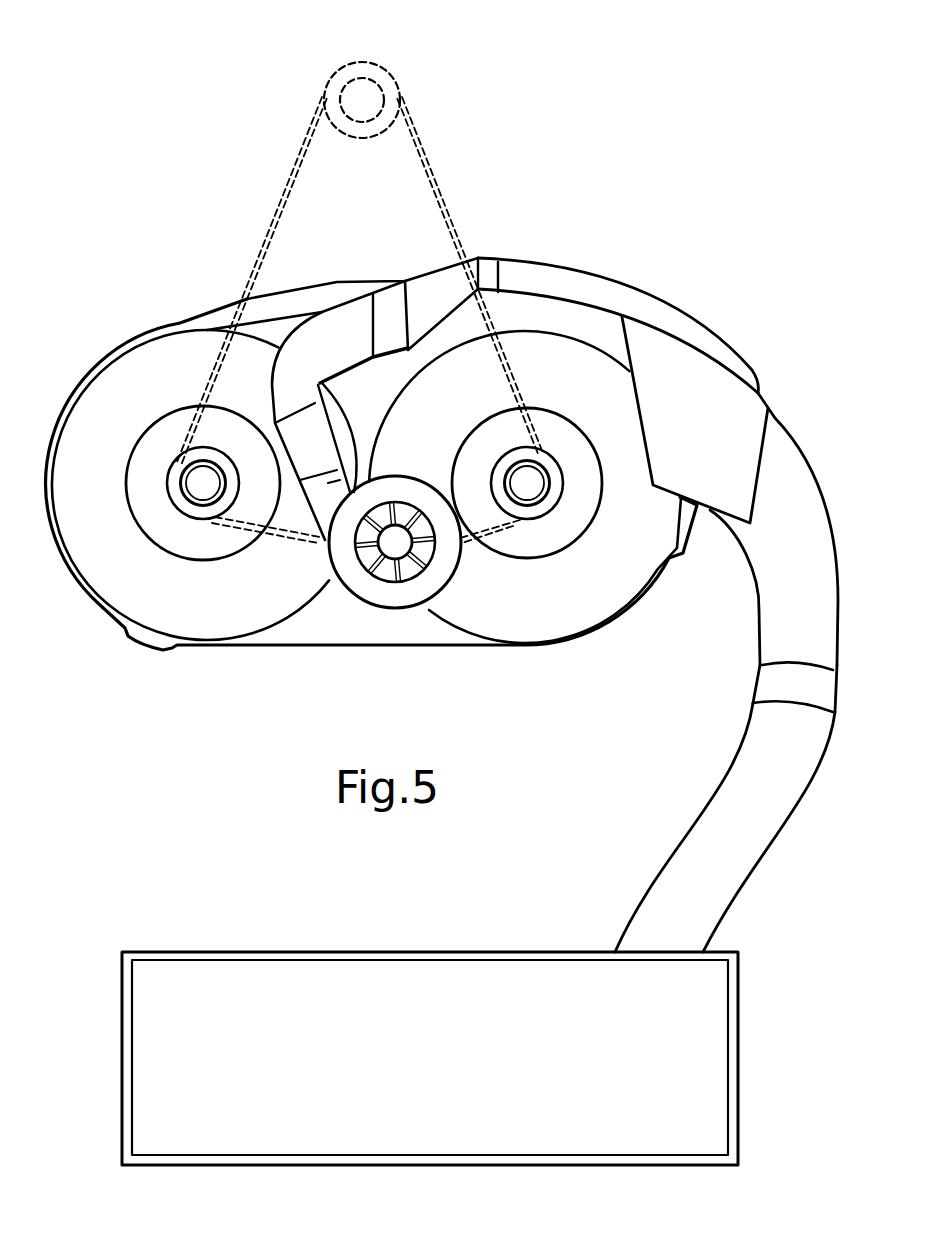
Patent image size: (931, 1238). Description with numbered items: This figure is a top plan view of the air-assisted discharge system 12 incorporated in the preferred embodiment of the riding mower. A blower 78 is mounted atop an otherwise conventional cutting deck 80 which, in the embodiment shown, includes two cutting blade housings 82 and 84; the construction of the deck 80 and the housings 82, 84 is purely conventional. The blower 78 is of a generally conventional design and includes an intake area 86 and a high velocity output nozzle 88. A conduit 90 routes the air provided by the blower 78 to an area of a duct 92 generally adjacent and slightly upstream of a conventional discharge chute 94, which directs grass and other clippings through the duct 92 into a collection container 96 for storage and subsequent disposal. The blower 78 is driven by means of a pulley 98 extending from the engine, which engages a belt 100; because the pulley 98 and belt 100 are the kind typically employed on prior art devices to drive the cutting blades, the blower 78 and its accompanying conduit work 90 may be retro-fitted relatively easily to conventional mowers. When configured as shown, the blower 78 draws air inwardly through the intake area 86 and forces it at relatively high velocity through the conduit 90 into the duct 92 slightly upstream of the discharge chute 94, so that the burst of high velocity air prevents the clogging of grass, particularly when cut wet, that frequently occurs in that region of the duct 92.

The air-assisted discharge system 12 is at (524, 206).
The blower 78 is at (445, 568).
The cutting deck 80 is at (282, 648).
The cutting blade housing 82 is at (149, 606).
The cutting blade housing 84 is at (598, 566).
The intake area 86 is at (393, 572).
The high velocity output nozzle 88 is at (352, 472).
The conduit 90 is at (324, 351).
The duct 92 is at (781, 606).
The discharge chute 94 is at (686, 438).
The collection container 96 is at (406, 1070).
The pulley 98 is at (377, 73).
The belt 100 is at (430, 167).